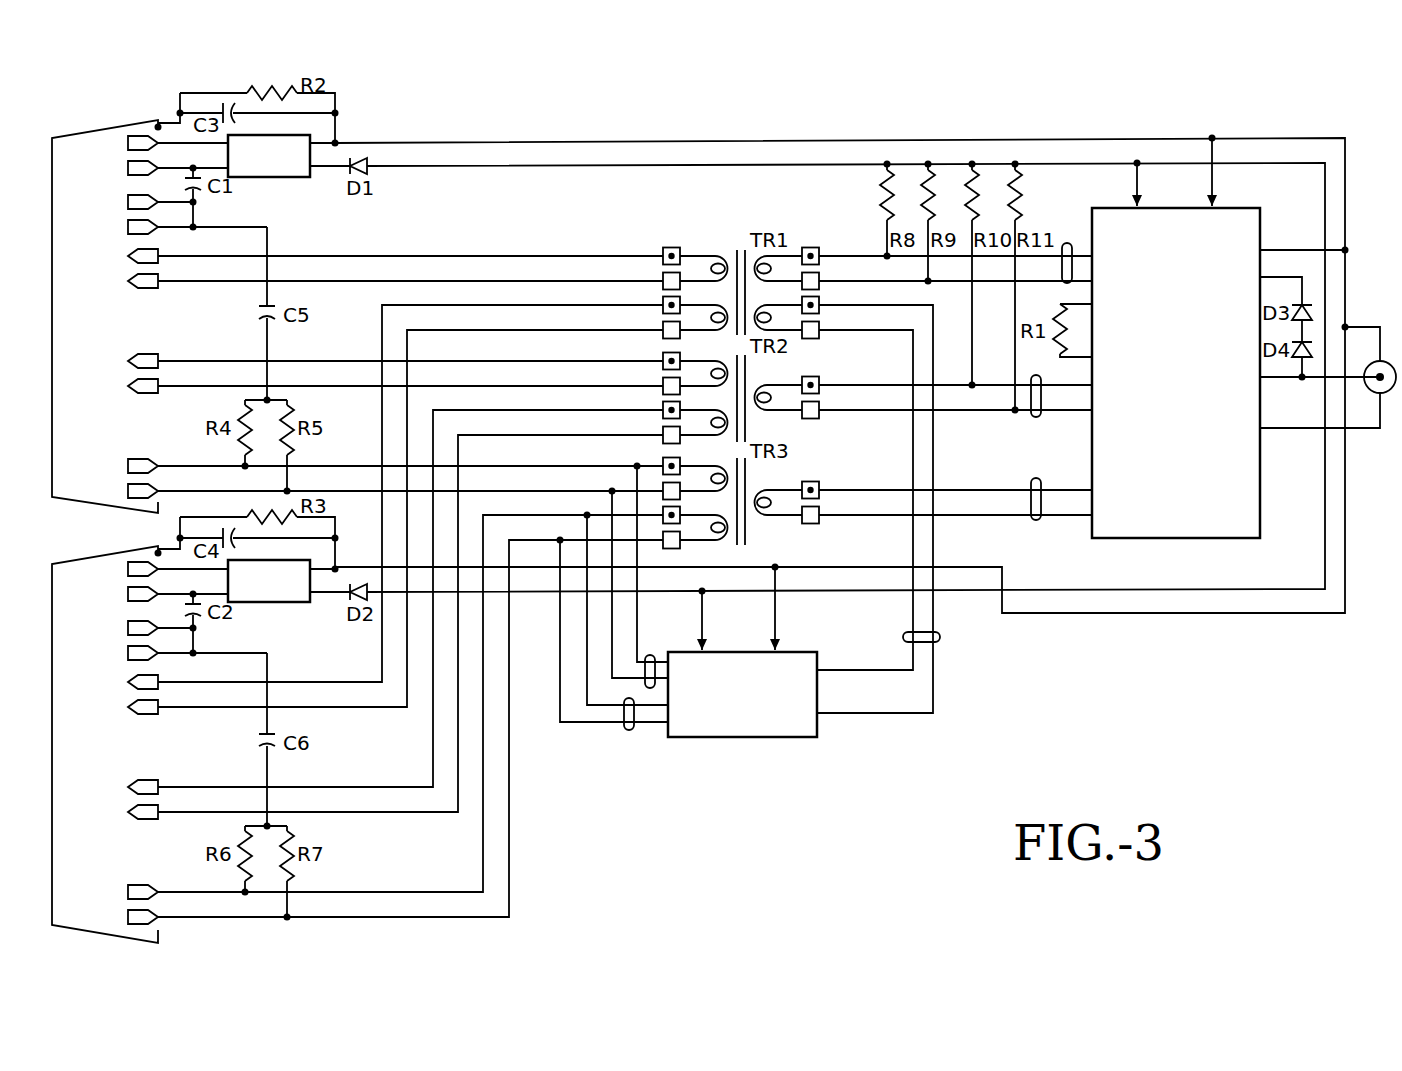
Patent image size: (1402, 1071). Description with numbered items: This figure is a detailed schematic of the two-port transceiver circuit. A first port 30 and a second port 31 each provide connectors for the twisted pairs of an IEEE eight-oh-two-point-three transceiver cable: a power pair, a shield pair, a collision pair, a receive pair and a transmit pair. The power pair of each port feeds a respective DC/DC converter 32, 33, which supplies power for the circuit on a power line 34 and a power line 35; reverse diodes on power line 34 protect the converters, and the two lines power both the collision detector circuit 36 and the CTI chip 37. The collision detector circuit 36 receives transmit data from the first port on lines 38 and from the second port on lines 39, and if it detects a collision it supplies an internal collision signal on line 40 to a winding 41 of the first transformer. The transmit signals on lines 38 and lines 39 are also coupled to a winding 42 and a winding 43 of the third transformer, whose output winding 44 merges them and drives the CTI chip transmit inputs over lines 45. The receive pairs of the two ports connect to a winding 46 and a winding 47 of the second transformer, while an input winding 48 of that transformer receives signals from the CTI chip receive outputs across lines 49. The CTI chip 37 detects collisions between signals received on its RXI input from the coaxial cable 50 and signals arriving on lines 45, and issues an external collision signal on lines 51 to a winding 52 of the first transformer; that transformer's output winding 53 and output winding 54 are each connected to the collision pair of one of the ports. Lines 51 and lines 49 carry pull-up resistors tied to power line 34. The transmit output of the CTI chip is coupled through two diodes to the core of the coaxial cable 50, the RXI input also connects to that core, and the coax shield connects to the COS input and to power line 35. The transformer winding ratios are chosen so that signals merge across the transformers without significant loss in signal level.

The first port 30 is at (52, 312).
The second port 31 is at (52, 743).
The DC/DC converter 32 is at (272, 178).
The DC/DC converter 33 is at (272, 603).
The power line 34 is at (1096, 588).
The power line 35 is at (1118, 613).
The collision detector circuit 36 is at (770, 737).
The CTI chip 37 is at (1090, 528).
The lines 38 is at (650, 655).
The lines 39 is at (629, 730).
The line 40 is at (940, 637).
The winding 41 is at (824, 314).
The winding 42 is at (625, 477).
The winding 43 is at (598, 524).
The output winding 44 is at (824, 504).
The lines 45 is at (1036, 478).
The winding 46 is at (655, 370).
The winding 47 is at (648, 420).
The input winding 48 is at (824, 397).
The lines 49 is at (1036, 418).
The coaxial cable 50 is at (1395, 363).
The lines 51 is at (1065, 243).
The winding 52 is at (824, 263).
The output winding 53 is at (655, 316).
The output winding 54 is at (645, 263).